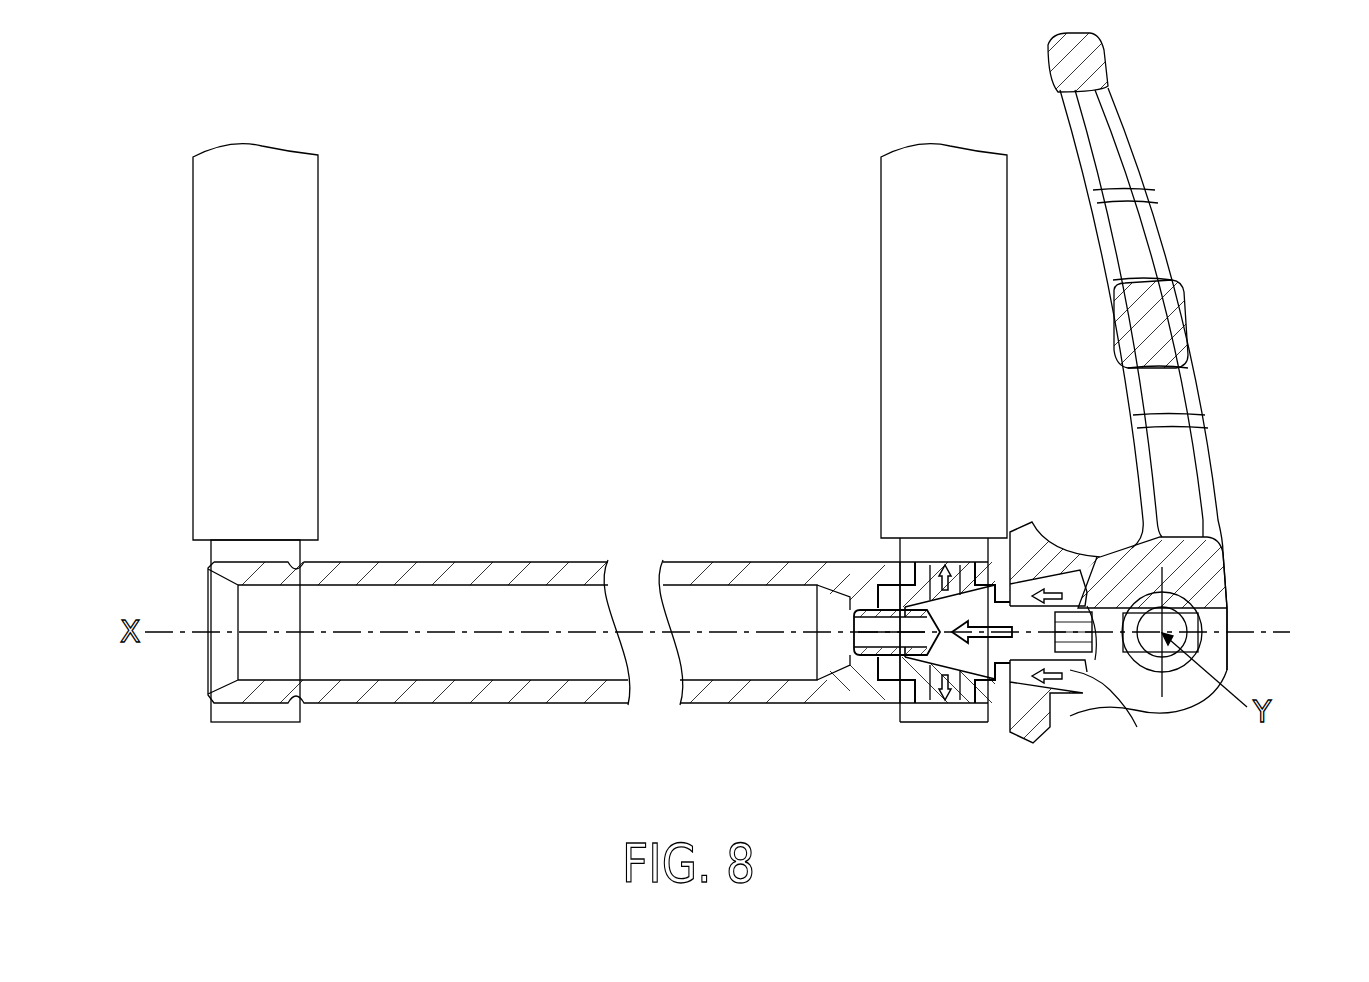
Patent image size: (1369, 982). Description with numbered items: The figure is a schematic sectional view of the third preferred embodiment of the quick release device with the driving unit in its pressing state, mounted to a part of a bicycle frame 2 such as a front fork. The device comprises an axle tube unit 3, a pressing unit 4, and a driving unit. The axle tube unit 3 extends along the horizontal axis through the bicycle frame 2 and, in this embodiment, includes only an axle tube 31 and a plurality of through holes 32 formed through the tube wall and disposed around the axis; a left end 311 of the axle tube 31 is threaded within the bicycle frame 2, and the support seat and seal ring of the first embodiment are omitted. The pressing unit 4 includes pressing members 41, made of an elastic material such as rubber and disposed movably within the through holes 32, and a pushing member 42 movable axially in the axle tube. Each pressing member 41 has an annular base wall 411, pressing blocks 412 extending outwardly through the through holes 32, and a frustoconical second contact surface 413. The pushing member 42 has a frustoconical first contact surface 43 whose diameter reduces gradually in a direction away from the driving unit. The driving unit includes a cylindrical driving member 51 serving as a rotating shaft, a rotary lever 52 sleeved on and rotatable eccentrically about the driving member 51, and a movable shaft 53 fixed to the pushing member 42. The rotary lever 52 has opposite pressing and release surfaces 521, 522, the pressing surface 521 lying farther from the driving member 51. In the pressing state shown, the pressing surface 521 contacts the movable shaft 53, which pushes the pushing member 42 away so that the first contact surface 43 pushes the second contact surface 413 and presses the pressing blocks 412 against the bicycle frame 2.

The bicycle frame 2 is at (186, 297).
The axle tube unit 3 is at (437, 722).
The axle tube 31 is at (509, 690).
The left end 311 is at (255, 722).
The through holes 32 is at (900, 577).
The pressing unit 4 is at (856, 688).
The pushing member 42 is at (856, 664).
The pressing members 41 is at (957, 700).
The annular base wall 411 is at (903, 690).
The pressing blocks 412 is at (938, 703).
The second contact surface 413 is at (1004, 684).
The first contact surface 43 is at (935, 605).
The driving member 51 is at (1173, 665).
The rotary lever 52 is at (1225, 562).
The pressing surface 521 is at (1080, 670).
The release surface 522 is at (1230, 622).
The movable shaft 53 is at (1042, 705).